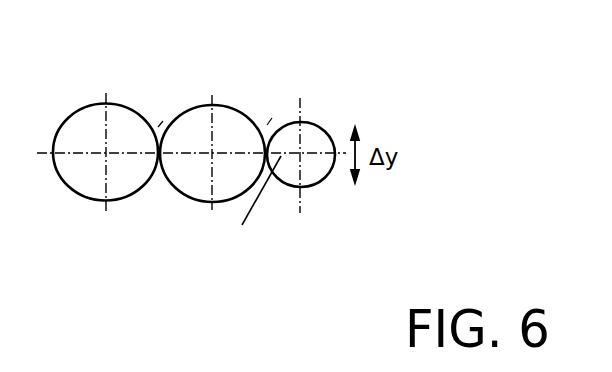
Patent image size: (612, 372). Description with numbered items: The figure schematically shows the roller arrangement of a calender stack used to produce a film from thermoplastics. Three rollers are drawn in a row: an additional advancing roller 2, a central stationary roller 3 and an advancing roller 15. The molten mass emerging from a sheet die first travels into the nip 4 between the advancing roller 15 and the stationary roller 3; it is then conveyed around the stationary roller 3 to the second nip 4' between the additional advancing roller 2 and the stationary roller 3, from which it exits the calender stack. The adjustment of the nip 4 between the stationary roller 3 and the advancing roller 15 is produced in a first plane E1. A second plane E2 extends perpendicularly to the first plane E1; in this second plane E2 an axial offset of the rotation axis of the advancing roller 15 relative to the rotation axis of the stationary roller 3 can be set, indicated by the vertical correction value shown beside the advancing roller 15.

The additional advancing roller 2 is at (112, 102).
The stationary roller 3 is at (237, 108).
The advancing roller 15 is at (318, 125).
The second nip 4' is at (186, 83).
The nip 4 is at (302, 71).
The first plane E1 is at (252, 212).
The second plane E2 is at (303, 212).